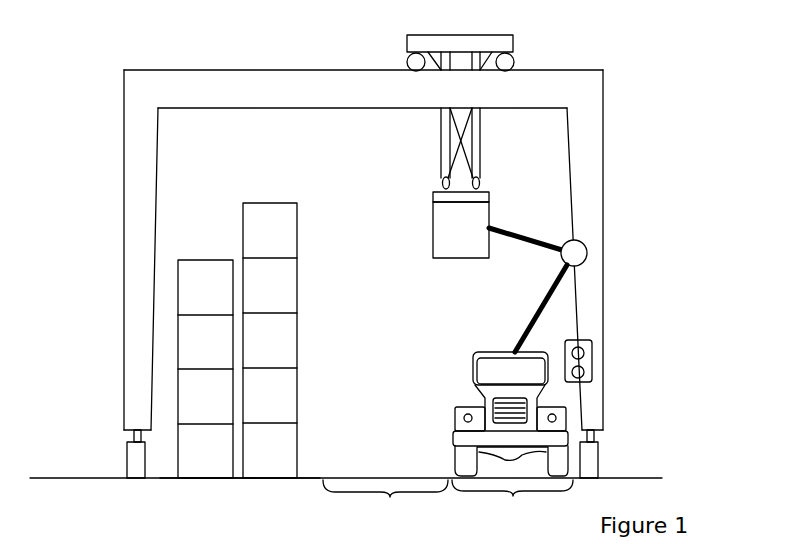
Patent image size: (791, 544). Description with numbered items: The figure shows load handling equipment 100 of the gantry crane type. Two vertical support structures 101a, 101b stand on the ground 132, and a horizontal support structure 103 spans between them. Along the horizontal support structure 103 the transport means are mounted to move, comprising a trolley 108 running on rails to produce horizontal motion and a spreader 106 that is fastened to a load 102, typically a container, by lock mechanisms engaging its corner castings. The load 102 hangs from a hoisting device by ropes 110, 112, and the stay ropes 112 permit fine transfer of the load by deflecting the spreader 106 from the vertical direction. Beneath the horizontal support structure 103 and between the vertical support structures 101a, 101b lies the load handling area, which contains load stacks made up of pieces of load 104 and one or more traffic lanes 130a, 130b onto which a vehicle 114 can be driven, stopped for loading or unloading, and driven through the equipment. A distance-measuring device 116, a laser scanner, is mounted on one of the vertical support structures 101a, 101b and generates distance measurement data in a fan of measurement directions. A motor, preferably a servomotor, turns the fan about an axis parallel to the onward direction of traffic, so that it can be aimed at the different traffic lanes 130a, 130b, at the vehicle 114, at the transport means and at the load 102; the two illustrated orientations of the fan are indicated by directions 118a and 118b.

The load handling equipment 100 is at (364, 255).
The vertical support structure 101a is at (124, 280).
The vertical support structure 101b is at (604, 146).
The load 102 is at (461, 230).
The horizontal support structure 103 is at (560, 69).
The pieces of load 104 is at (224, 260).
The spreader 106 is at (433, 196).
The trolley 108 is at (407, 42).
The ropes 110 is at (482, 162).
The stay ropes 112 is at (452, 162).
The vehicle 114 is at (481, 353).
The distance-measuring device 116 is at (588, 255).
The direction of the fan 118a is at (530, 240).
The direction of the fan 118b is at (522, 333).
The traffic lane 130a is at (512, 503).
The traffic lane 130b is at (385, 502).
The ground 132 is at (240, 497).